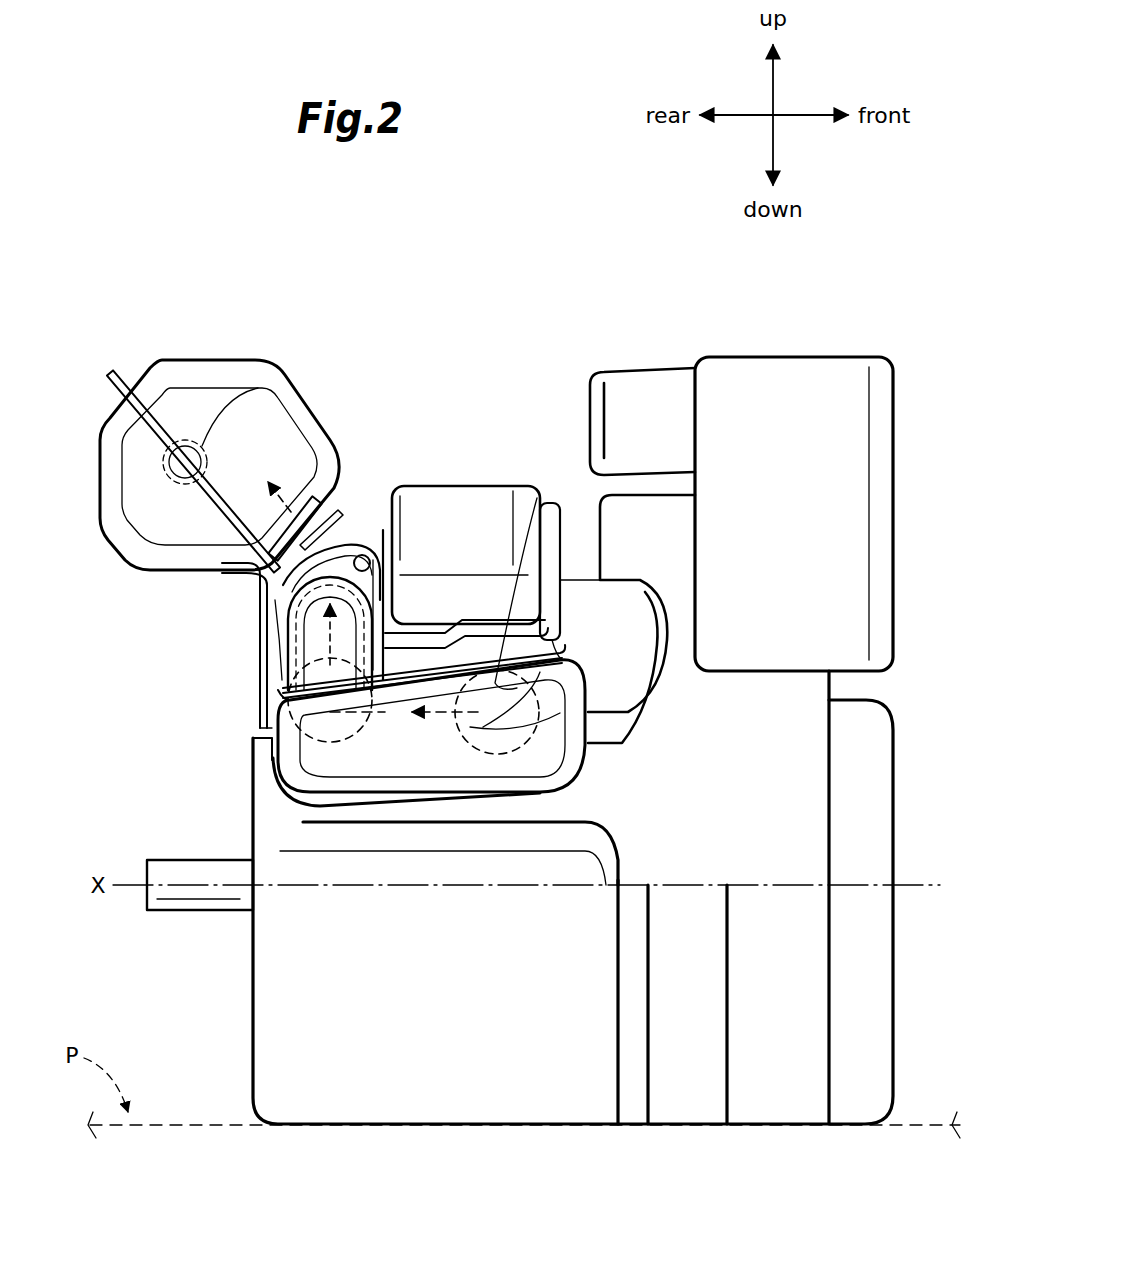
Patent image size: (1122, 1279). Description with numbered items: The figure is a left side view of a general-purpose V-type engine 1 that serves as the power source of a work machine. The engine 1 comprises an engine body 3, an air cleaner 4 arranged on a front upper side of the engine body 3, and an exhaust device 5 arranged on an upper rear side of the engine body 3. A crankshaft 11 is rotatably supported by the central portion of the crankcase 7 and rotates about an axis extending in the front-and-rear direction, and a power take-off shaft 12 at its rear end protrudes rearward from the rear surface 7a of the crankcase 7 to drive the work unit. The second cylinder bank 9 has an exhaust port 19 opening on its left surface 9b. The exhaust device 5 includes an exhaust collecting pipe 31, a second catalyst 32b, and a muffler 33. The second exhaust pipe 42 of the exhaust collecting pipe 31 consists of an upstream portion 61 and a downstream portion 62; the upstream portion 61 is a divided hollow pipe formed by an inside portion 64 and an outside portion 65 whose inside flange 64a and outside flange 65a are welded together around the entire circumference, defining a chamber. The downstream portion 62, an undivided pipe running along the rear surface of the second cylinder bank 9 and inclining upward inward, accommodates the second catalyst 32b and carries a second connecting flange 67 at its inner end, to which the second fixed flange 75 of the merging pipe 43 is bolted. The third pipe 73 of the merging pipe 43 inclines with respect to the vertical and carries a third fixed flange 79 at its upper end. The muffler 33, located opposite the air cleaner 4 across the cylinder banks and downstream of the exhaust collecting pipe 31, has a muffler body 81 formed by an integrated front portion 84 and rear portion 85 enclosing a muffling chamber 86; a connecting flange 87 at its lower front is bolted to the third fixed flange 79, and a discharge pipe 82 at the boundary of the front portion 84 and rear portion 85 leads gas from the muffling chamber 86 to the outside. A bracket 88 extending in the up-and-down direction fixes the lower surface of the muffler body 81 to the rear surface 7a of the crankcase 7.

The engine 1 is at (180, 316).
The engine body 3 is at (235, 1068).
The air cleaner 4 is at (806, 348).
The exhaust device 5 is at (84, 382).
The crankcase 7 is at (250, 1035).
The rear surface of the crankcase 7a is at (252, 983).
The second cylinder bank 9 is at (546, 496).
The left surface of the second cylinder bank 9b is at (563, 600).
The crankshaft 11 is at (158, 912).
The power take-off shaft 12 is at (163, 865).
The exhaust port 19 is at (540, 498).
The exhaust collecting pipe 31 is at (262, 697).
The second catalyst 32b is at (274, 624).
The muffler 33 is at (318, 384).
The second exhaust pipe 42 is at (258, 668).
The merging pipe 43 is at (360, 540).
The upstream portion 61 is at (258, 748).
The downstream portion 62 is at (262, 645).
The inside portion 64 is at (288, 594).
The inside flange 64a is at (222, 576).
The outside portion 65 is at (330, 768).
The outside flange 65a is at (303, 822).
The second connecting flange 67 is at (432, 655).
The third pipe 73 is at (358, 532).
The second fixed flange 75 is at (375, 573).
The third fixed flange 79 is at (352, 522).
The muffler body 81 is at (218, 352).
The discharge pipe 82 is at (267, 362).
The front portion 84 is at (328, 414).
The rear portion 85 is at (98, 440).
The muffling chamber 86 is at (180, 398).
The connecting flange 87 is at (392, 655).
The bracket 88 is at (262, 720).